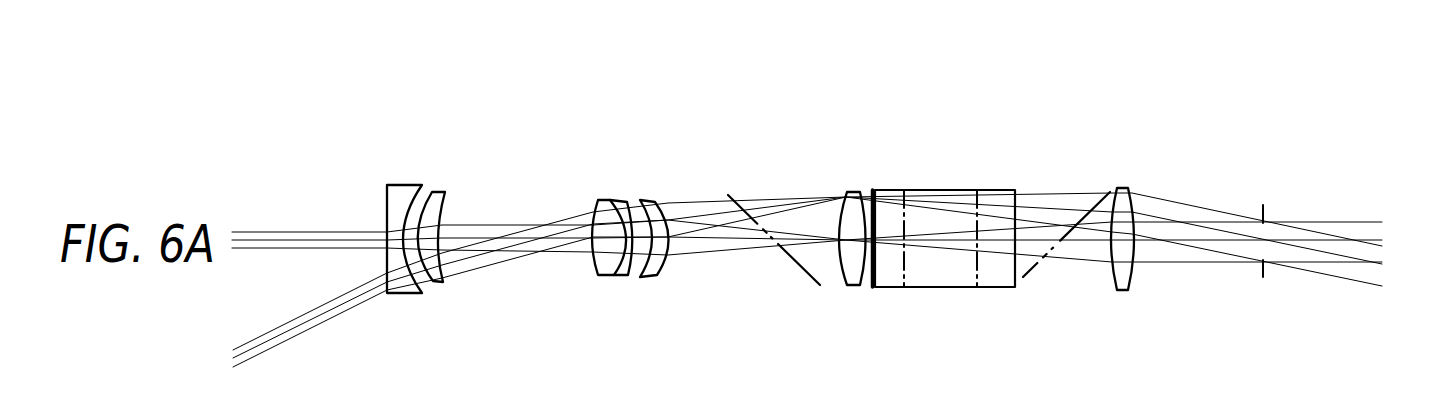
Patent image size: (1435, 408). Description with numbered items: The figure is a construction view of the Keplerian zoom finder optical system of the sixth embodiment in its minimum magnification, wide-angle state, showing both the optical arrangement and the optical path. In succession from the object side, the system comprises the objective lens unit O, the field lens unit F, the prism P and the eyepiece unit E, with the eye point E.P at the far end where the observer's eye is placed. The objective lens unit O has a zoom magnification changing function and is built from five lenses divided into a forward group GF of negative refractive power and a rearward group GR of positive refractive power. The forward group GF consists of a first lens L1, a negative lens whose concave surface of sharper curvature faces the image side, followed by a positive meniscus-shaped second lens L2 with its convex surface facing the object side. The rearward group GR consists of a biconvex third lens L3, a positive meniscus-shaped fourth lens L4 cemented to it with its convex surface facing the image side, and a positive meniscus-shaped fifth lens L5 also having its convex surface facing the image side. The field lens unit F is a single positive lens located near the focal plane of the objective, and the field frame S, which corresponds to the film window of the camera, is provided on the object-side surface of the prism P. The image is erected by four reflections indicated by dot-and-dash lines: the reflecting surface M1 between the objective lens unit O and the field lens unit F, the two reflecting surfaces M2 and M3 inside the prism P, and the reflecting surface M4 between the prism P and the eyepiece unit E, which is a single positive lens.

The objective lens unit O is at (652, 97).
The forward group GF is at (453, 139).
The rearward group GR is at (678, 139).
The first lens L1 is at (403, 183).
The second lens L2 is at (439, 191).
The third lens L3 is at (600, 198).
The fourth lens L4 is at (626, 200).
The fifth lens L5 is at (650, 198).
The reflecting surface M1 is at (807, 272).
The field lens unit F is at (867, 172).
The field frame S is at (870, 281).
The prism P is at (1015, 172).
The reflecting surface M2 is at (904, 280).
The reflecting surface M3 is at (977, 280).
The reflecting surface M4 is at (1030, 270).
The eyepiece unit E is at (1138, 172).
The eye point E.P is at (1260, 233).